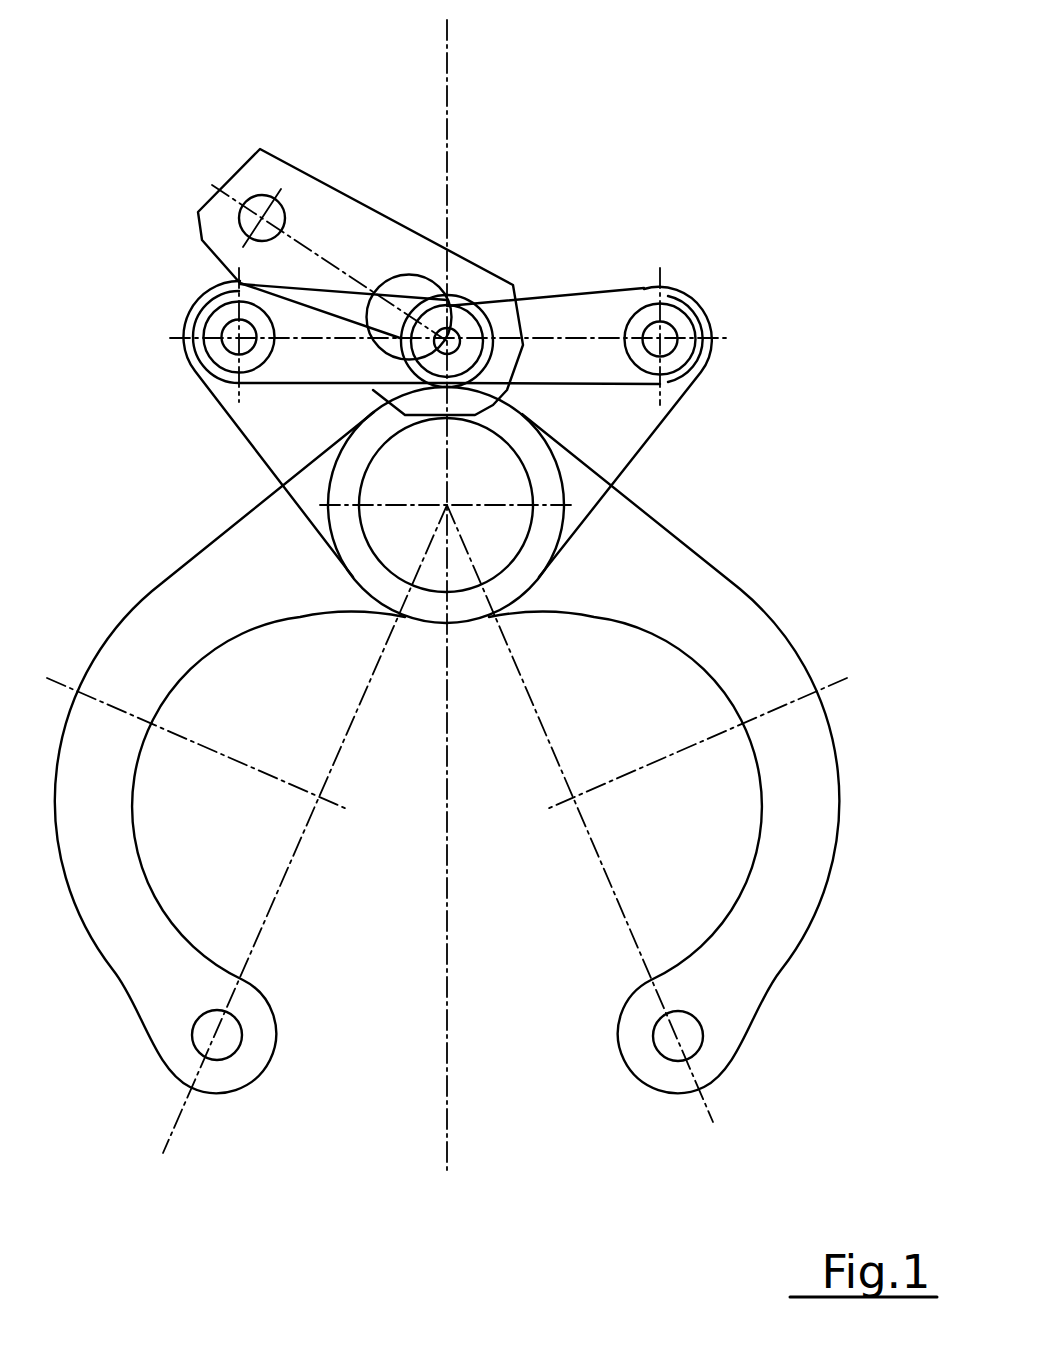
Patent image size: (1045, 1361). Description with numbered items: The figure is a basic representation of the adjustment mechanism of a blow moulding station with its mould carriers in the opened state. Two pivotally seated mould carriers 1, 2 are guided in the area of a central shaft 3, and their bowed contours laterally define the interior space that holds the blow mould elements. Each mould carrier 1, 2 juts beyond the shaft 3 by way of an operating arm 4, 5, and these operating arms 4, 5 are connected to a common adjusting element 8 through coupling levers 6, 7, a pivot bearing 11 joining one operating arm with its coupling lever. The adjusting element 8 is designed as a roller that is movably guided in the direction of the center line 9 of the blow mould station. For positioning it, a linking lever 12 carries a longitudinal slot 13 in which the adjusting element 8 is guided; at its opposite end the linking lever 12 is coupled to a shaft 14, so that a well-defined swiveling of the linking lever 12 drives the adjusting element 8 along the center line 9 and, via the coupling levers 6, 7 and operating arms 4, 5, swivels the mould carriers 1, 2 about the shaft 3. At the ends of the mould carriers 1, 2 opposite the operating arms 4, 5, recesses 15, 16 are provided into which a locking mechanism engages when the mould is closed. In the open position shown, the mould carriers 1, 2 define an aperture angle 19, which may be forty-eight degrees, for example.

The mould carrier 1 is at (150, 612).
The mould carrier 2 is at (727, 600).
The shaft 3 is at (485, 472).
The operating arm 4 is at (240, 432).
The operating arm 5 is at (672, 398).
The coupling lever 6 is at (341, 308).
The coupling lever 7 is at (547, 312).
The adjusting element 8 is at (449, 338).
The center line 9 is at (451, 96).
The pivot bearing 11 is at (662, 337).
The linking lever 12 is at (310, 196).
The longitudinal slot 13 is at (410, 288).
The shaft 14 is at (252, 198).
The recess 15 is at (222, 1042).
The recess 16 is at (236, 334).
The aperture angle 19 is at (360, 712).